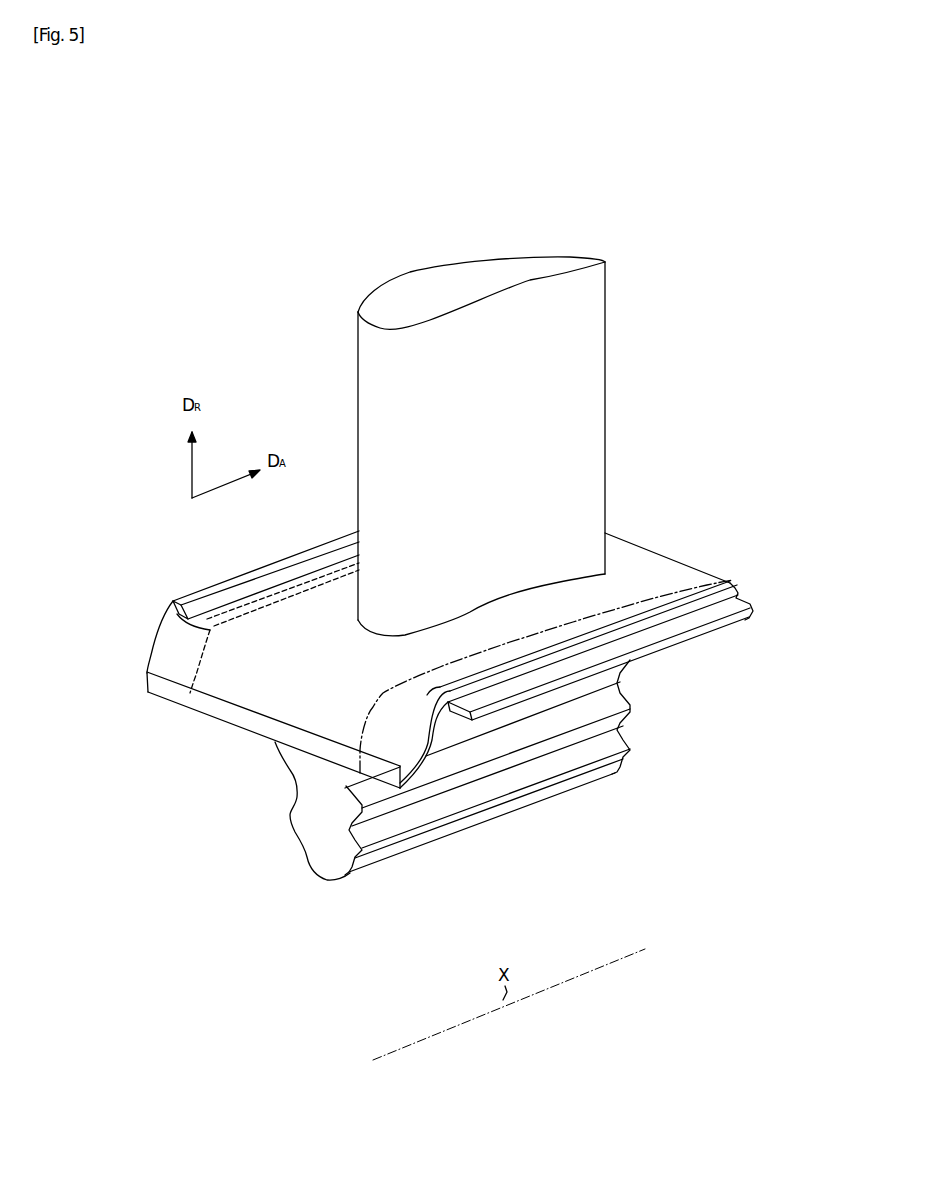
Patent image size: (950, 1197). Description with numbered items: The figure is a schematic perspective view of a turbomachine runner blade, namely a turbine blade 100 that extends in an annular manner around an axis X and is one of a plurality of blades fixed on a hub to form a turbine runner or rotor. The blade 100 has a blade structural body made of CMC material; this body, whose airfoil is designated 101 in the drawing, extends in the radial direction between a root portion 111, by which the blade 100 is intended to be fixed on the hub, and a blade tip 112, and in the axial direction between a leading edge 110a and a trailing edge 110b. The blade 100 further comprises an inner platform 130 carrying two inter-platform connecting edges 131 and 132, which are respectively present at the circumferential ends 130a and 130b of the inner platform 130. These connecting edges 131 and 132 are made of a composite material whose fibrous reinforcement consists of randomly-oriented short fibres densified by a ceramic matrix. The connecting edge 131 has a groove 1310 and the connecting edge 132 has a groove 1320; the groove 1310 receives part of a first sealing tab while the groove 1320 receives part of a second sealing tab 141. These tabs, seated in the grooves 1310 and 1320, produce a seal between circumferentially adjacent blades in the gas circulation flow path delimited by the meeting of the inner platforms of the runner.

The turbine blade 100 is at (606, 194).
The airfoil 101 is at (627, 372).
The leading edge 110a is at (360, 396).
The trailing edge 110b is at (607, 317).
The root portion 111 is at (316, 813).
The blade tip 112 is at (382, 302).
The inner platform 130 is at (628, 557).
The circumferential end of the inner platform 130a is at (373, 703).
The circumferential end of the inner platform 130b is at (203, 663).
The inter-platform connecting edge 131 is at (705, 580).
The groove 1310 is at (722, 583).
The inter-platform connecting edge 132 is at (170, 690).
The groove 1320 is at (176, 612).
The second sealing tab 141 is at (697, 627).